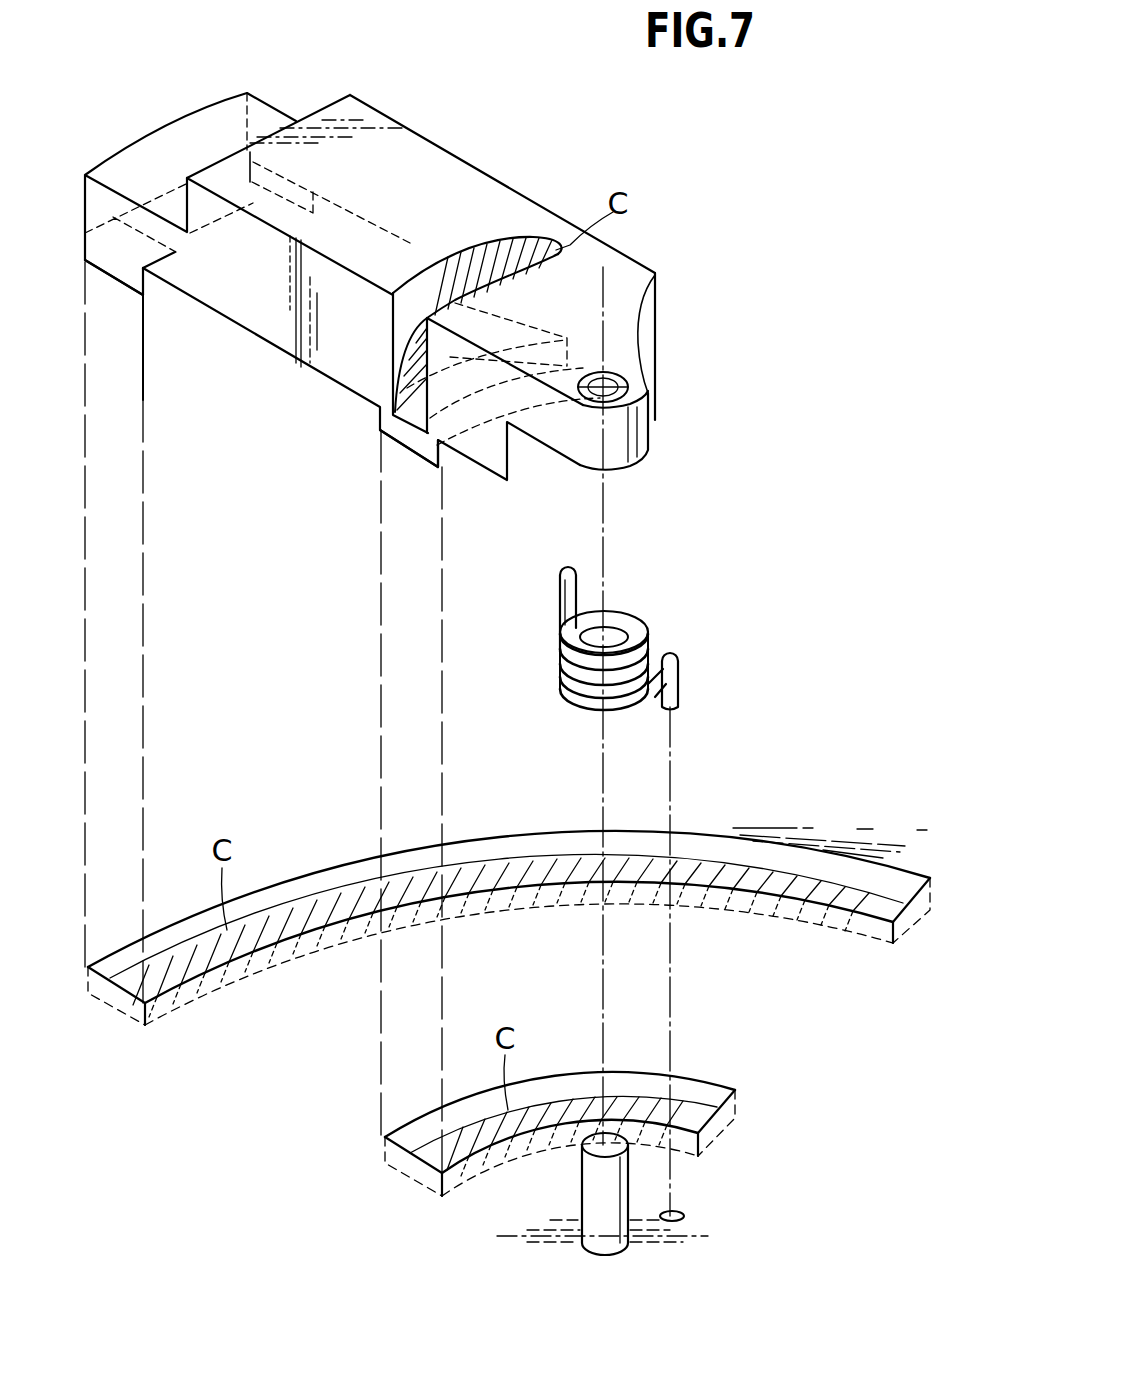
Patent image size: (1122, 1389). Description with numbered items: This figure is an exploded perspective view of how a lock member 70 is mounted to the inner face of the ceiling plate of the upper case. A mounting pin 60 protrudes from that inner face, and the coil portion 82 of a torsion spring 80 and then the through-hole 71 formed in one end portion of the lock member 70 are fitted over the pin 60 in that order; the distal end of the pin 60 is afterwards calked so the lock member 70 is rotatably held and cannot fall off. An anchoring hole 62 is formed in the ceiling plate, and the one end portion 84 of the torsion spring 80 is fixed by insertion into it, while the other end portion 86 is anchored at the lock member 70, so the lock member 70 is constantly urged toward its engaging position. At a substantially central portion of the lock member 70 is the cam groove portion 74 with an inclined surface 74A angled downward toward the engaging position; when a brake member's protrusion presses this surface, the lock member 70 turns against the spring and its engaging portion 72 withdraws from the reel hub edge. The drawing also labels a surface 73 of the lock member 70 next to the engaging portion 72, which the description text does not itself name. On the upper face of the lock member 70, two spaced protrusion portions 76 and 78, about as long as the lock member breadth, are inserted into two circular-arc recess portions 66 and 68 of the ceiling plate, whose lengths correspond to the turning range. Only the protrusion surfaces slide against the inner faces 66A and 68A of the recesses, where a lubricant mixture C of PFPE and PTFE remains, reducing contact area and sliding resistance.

The mounting pin 60 is at (593, 1172).
The anchoring hole 62 is at (684, 1212).
The recess portion 66 is at (690, 1092).
The inner face of recess portion 66A is at (697, 1117).
The recess portion 68 is at (750, 852).
The inner face of recess portion 68A is at (868, 898).
The lock member 70 is at (433, 143).
The through-hole 71 is at (622, 368).
The engaging portion 72 is at (203, 137).
The top surface 73 is at (317, 103).
The cam groove portion 74 is at (415, 303).
The inclined surface 74A is at (523, 257).
The protrusion portion 76 is at (408, 452).
The protrusion portion 78 is at (107, 275).
The torsion spring 80 is at (642, 620).
The coil portion 82 is at (615, 620).
The one end portion of torsion spring 84 is at (675, 697).
The other end portion of torsion spring 86 is at (566, 560).